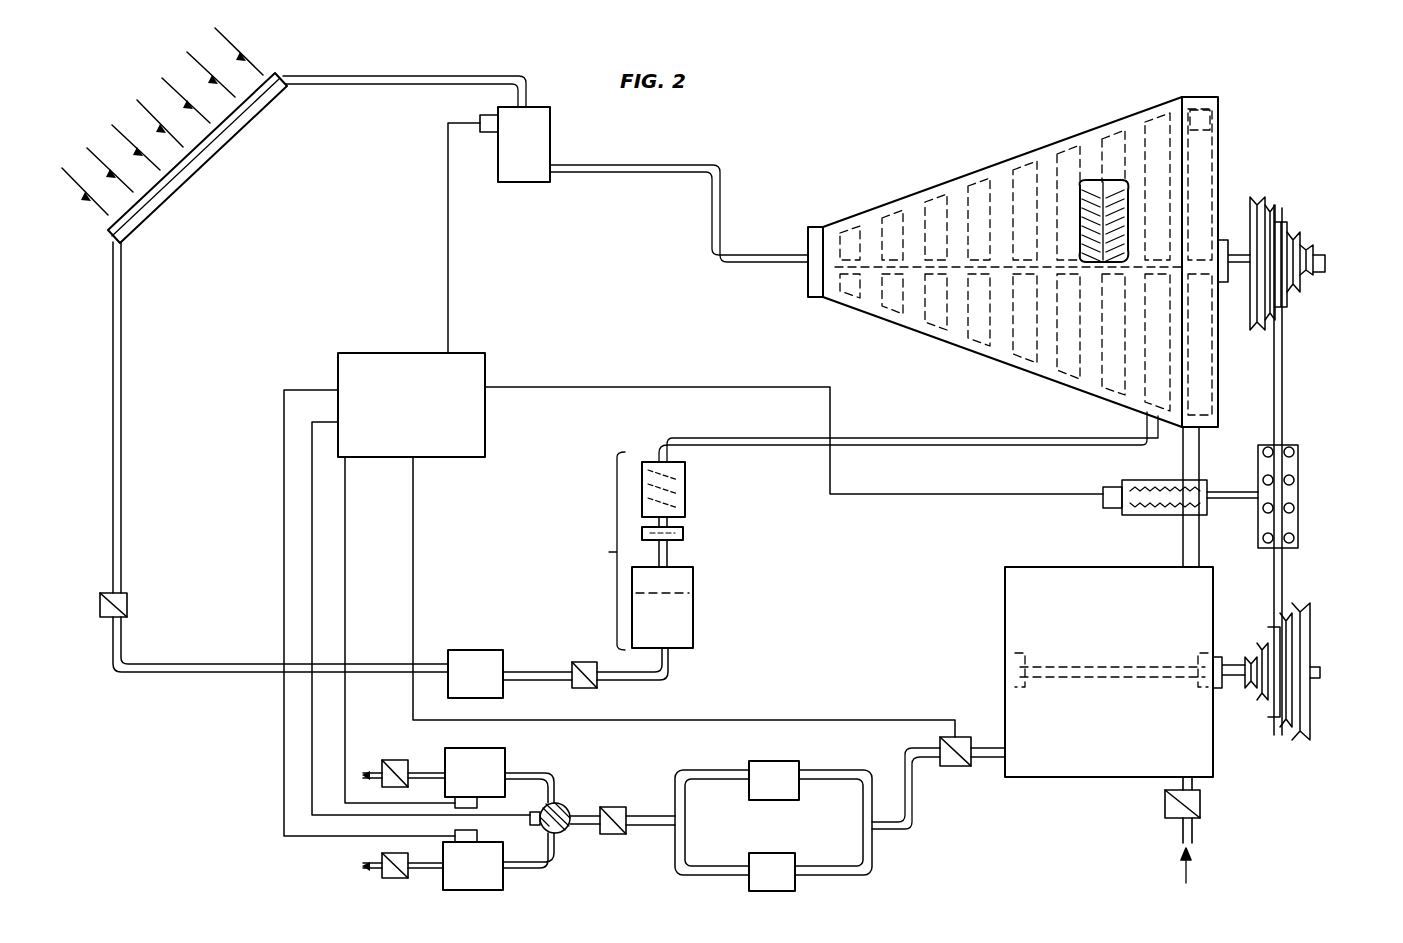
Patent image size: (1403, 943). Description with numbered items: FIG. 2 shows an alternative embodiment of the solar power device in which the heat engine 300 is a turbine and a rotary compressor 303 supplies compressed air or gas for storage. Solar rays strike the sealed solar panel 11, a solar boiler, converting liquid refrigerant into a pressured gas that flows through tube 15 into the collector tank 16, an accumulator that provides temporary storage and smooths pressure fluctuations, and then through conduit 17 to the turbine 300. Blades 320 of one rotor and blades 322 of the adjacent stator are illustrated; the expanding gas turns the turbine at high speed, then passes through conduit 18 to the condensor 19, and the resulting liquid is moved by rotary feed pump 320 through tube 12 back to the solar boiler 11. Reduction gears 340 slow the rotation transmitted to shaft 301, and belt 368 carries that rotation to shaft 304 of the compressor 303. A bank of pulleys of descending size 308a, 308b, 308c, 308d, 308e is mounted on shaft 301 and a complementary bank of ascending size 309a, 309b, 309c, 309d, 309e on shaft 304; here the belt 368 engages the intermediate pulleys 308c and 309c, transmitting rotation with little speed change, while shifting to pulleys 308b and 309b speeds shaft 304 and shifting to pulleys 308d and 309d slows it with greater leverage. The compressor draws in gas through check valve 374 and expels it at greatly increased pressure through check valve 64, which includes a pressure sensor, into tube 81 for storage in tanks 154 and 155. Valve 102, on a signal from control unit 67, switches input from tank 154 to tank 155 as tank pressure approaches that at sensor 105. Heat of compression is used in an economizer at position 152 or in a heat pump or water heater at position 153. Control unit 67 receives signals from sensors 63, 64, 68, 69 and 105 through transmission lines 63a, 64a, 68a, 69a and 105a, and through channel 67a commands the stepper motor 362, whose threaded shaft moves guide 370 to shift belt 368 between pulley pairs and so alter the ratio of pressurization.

The solar panel 11 is at (255, 130).
The tube 12 is at (121, 492).
The tube 15 is at (371, 77).
The collector tank 16 is at (524, 144).
The conduit 17 is at (712, 230).
The conduit 18 is at (979, 438).
The condensor 19 is at (609, 551).
The pressure sensor 63 is at (490, 133).
The transmission line 63a is at (448, 233).
The check valve 64 is at (958, 737).
The transmission line 64a is at (762, 720).
The pressure control unit 67 is at (411, 405).
The channel 67a is at (945, 480).
The pressure sensor 68 is at (478, 803).
The transmission line 68a is at (345, 755).
The pressure sensor 69 is at (478, 836).
The transmission line 69a is at (284, 825).
The tube 81 is at (906, 803).
The valve 102 is at (566, 808).
The pressure sensor 105 is at (552, 792).
The transmission line 105a is at (312, 770).
The economizer 152 is at (749, 818).
The heat pump or water heater 153 is at (772, 872).
The storage tank 154 is at (433, 772).
The storage tank 155 is at (432, 866).
The heat engine 300 is at (898, 180).
The shaft 301 is at (1327, 257).
The rotary compressor 303 is at (1125, 602).
The shaft 304 is at (1322, 668).
The pulley 308a is at (1257, 200).
The pulley 308b is at (1272, 208).
The pulley 308c is at (1288, 222).
The pulley 308d is at (1303, 292).
The pulley 308e is at (1316, 272).
The pulley 309a is at (1250, 657).
The pulley 309b is at (1262, 700).
The pulley 309c is at (1276, 717).
The pulley 309d is at (1290, 613).
The pulley 309e is at (1310, 612).
The rotor blades / rotary feed pump 320 is at (1112, 180).
The stator blades 322 is at (1088, 186).
The reduction gears 340 is at (1218, 113).
The stepper motor 362 is at (1122, 480).
The belt 368 is at (1284, 370).
The guide 370 is at (1300, 468).
The check valve 374 is at (1202, 810).